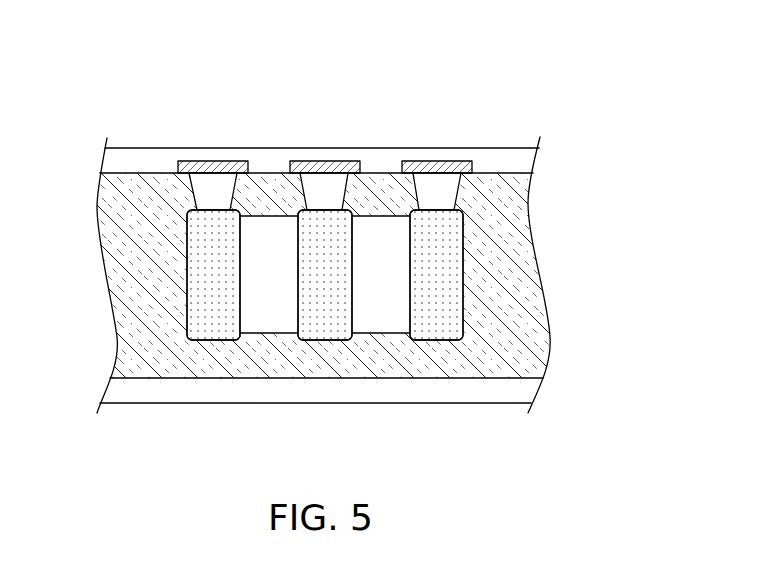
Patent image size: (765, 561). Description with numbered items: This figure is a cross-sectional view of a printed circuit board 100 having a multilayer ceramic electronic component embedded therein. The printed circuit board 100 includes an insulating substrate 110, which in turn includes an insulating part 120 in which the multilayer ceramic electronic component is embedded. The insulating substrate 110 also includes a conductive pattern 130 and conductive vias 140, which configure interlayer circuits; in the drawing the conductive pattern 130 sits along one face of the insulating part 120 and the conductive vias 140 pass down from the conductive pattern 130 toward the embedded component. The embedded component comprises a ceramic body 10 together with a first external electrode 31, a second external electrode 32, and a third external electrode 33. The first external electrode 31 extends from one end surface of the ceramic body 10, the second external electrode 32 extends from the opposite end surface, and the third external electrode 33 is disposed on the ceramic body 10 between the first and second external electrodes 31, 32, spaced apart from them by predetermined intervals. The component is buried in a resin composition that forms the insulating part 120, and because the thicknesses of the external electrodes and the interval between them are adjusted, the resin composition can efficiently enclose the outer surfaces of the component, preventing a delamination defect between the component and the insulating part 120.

The printed circuit board 100 is at (383, 73).
The insulating substrate 110 is at (522, 162).
The insulating part 120 is at (523, 208).
The conductive pattern 130 is at (195, 162).
The conductive vias 140 is at (218, 188).
The ceramic body 10 is at (258, 318).
The first external electrode 31 is at (195, 245).
The second external electrode 32 is at (447, 285).
The third external electrode 33 is at (323, 327).